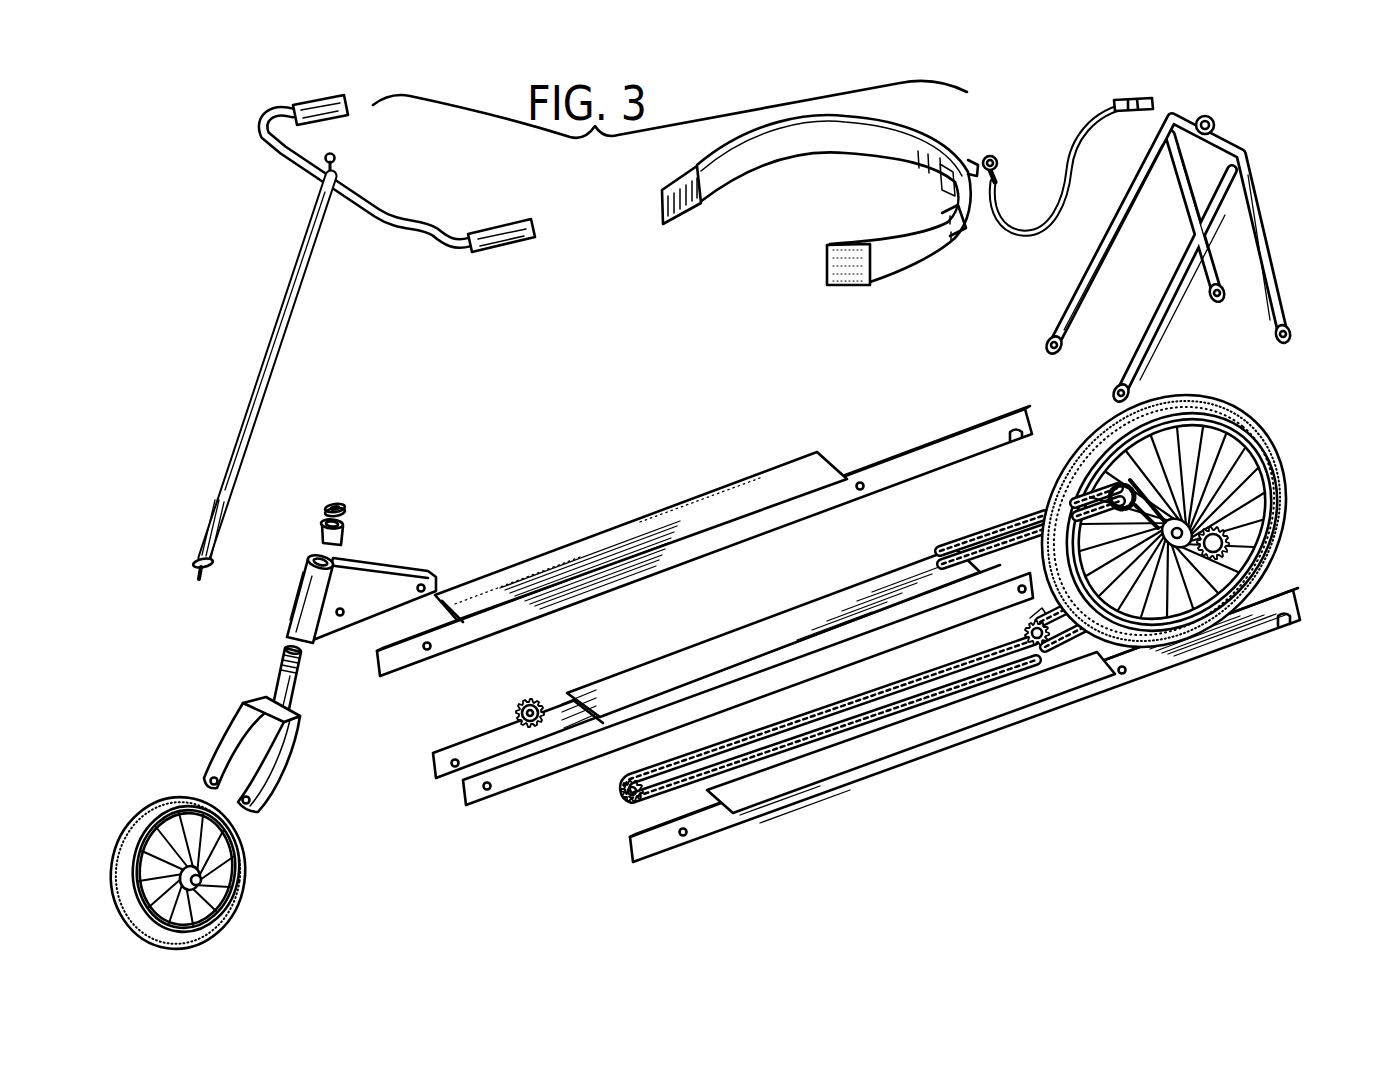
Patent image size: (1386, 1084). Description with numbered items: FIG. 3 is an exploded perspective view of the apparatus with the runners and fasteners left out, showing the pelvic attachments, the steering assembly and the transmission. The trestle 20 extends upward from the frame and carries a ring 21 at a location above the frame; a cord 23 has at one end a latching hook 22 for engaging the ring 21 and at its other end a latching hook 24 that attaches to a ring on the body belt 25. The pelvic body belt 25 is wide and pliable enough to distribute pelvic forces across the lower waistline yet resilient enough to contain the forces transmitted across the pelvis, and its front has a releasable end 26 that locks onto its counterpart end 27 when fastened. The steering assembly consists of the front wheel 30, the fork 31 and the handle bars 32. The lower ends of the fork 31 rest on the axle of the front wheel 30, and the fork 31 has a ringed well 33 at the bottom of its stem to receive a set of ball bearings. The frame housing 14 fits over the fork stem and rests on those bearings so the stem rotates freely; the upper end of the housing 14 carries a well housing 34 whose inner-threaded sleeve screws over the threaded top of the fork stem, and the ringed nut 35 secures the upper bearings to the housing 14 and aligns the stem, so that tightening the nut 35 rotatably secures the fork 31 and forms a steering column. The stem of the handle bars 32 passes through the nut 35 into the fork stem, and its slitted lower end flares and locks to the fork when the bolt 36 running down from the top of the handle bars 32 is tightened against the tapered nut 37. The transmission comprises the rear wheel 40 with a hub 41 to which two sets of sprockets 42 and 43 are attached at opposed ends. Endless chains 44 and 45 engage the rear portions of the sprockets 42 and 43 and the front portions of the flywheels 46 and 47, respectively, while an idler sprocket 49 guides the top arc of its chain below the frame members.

The frame housing 14 is at (297, 598).
The trestle 20 is at (1184, 254).
The ring 21 is at (1216, 129).
The latching hook 22 is at (1150, 113).
The cord 23 is at (1068, 165).
The latching hook 24 is at (1000, 168).
The body belt 25 is at (975, 225).
The releasable end 26 is at (873, 270).
The counterpart end 27 is at (835, 217).
The front wheel 30 is at (252, 860).
The fork 31 is at (273, 668).
The handle bars 32 is at (261, 377).
The ringed well 33 is at (254, 698).
The well housing 34 is at (345, 535).
The ringed nut 35 is at (347, 510).
The bolt 36 is at (336, 157).
The tapered nut 37 is at (212, 570).
The rear wheel 40 is at (1183, 521).
The hub 41 is at (1234, 408).
The sprocket 42 is at (1190, 394).
The sprocket 43 is at (1229, 547).
The endless chain 44 is at (552, 700).
The endless chain 45 is at (889, 696).
The flywheel 46 is at (516, 710).
The flywheel 47 is at (617, 808).
The idler sprocket 49 is at (1022, 637).